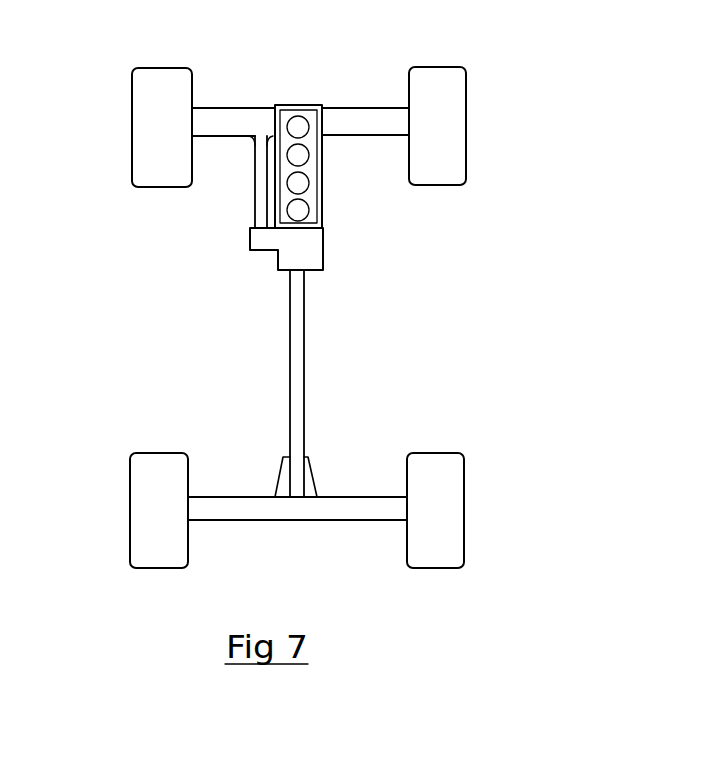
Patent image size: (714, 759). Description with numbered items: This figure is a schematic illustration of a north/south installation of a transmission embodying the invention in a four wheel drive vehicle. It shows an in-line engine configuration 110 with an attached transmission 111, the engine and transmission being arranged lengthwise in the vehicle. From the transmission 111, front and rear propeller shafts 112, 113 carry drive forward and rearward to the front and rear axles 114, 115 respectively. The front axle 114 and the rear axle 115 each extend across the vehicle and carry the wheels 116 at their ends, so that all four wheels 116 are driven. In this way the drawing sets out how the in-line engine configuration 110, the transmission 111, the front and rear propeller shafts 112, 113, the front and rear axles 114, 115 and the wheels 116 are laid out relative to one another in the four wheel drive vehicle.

The in-line engine configuration 110 is at (322, 206).
The transmission 111 is at (323, 257).
The front propeller shaft 112 is at (258, 203).
The rear propeller shaft 113 is at (290, 375).
The front axle 114 is at (372, 110).
The rear axle 115 is at (362, 521).
The wheels 116 is at (138, 120).